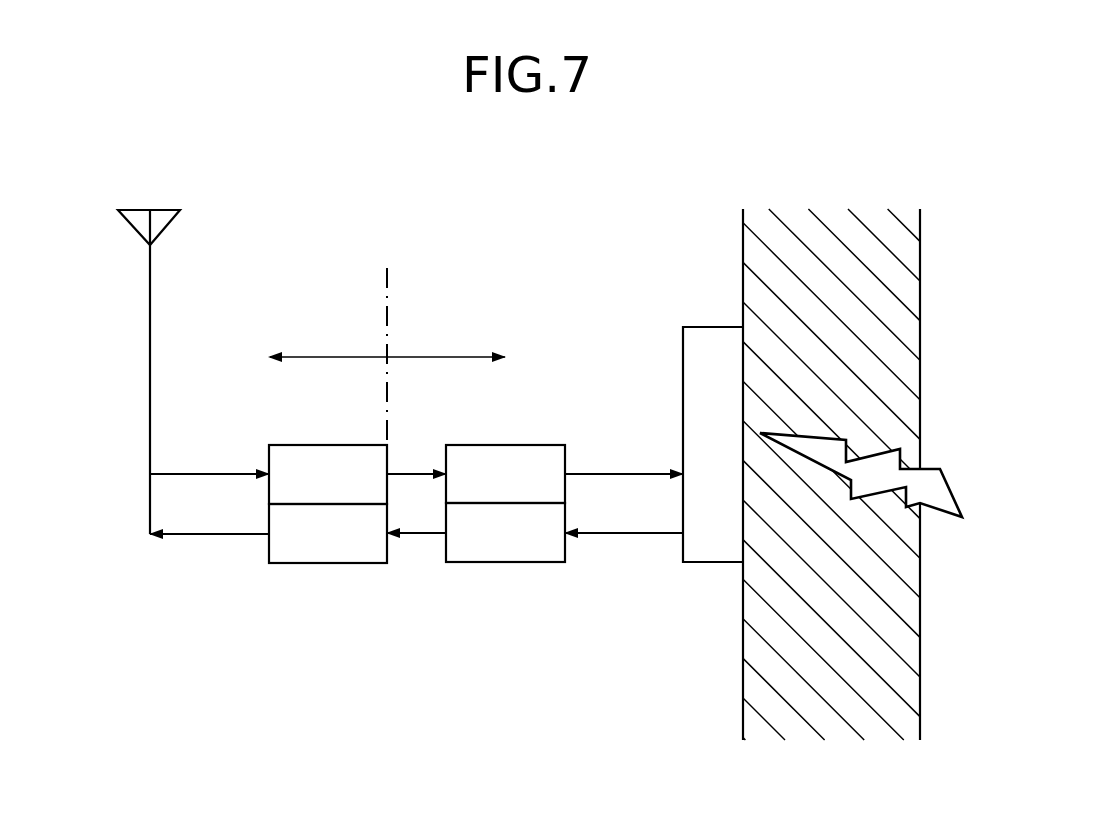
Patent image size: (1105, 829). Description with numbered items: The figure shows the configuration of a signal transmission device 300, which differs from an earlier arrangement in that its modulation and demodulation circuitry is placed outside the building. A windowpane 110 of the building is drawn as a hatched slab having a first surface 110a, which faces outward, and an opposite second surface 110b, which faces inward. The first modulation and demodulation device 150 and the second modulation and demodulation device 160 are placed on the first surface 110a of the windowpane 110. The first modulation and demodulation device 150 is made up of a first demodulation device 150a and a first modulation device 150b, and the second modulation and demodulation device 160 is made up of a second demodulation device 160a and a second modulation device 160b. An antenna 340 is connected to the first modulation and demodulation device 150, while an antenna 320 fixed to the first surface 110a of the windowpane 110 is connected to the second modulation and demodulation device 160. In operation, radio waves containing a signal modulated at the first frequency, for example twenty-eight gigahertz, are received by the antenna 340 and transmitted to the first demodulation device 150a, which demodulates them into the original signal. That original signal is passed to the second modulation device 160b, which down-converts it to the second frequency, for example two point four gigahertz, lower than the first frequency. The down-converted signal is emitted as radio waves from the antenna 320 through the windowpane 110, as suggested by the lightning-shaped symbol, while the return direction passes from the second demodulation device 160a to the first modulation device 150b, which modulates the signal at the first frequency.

The windowpane 110 is at (813, 227).
The first surface 110a is at (743, 243).
The second surface 110b is at (920, 273).
The first modulation and demodulation device 150 is at (271, 432).
The first demodulation device 150a is at (340, 452).
The first modulation device 150b is at (326, 555).
The second modulation and demodulation device 160 is at (544, 432).
The second demodulation device 160a is at (480, 555).
The second modulation device 160b is at (466, 451).
The signal transmission device 300 is at (582, 203).
The antenna 320 is at (705, 555).
The antenna 340 is at (137, 219).